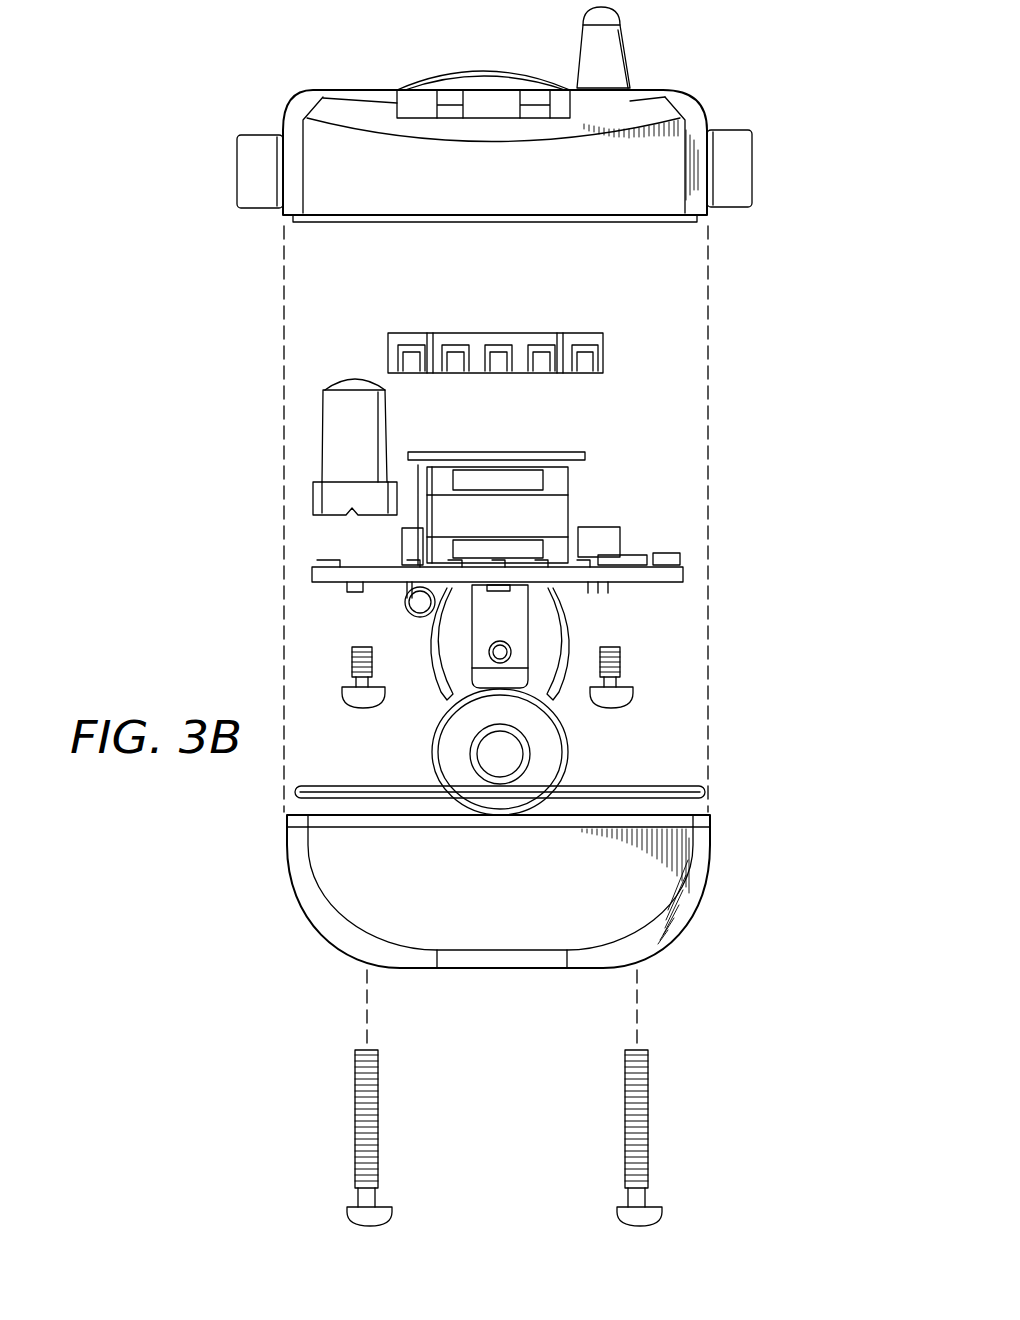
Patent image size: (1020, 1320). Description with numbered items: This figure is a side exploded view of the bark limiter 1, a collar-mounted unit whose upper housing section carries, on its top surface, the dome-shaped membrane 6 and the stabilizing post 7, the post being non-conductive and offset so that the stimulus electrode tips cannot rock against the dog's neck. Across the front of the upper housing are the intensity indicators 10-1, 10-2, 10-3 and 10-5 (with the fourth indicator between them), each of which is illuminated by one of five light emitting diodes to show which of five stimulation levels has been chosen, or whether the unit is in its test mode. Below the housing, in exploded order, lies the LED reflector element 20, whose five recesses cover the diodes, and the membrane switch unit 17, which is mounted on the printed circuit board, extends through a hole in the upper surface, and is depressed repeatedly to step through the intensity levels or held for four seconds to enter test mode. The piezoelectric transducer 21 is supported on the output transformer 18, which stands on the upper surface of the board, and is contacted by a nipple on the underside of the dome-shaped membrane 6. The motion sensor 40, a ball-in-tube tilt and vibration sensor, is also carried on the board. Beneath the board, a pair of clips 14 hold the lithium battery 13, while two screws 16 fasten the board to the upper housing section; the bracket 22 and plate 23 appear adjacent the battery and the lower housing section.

The bark limiter 1 is at (150, 74).
The dome-shaped membrane 6 is at (492, 72).
The stabilizing post 7 is at (632, 55).
The intensity indicator 10-1 is at (396, 193).
The intensity indicator 10-2 is at (456, 206).
The intensity indicator 10-3 is at (495, 206).
The intensity indicator 10-5 is at (578, 206).
The membrane switch unit 17 is at (352, 377).
The LED reflector element 20 is at (616, 346).
The piezoelectric transducer 21 is at (580, 446).
The output transformer 18 is at (599, 495).
The motion sensor 40 is at (405, 603).
The clips 14 is at (423, 647).
The bracket 22 is at (530, 642).
The screws 16 is at (623, 673).
The lithium battery 13 is at (432, 758).
The cover plate 23 is at (660, 784).